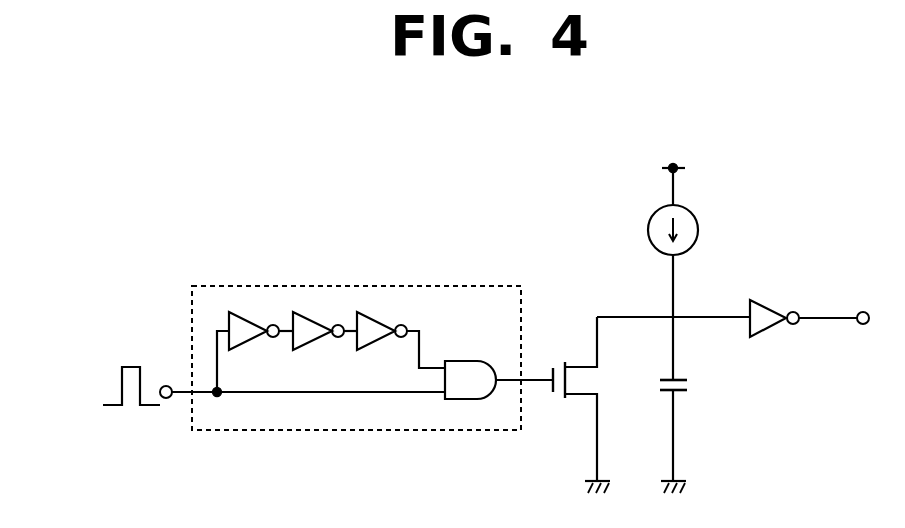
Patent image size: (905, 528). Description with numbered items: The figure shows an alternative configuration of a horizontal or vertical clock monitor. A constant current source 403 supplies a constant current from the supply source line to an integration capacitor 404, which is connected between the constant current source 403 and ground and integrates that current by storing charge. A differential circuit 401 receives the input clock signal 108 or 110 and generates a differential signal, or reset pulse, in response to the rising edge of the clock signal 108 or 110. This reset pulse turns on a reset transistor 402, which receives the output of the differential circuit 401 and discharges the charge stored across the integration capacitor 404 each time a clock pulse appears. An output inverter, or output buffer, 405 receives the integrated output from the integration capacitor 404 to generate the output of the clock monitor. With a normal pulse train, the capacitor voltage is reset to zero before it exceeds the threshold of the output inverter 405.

The input clock signal 108 is at (112, 386).
The input clock signal 110 is at (112, 386).
The differential circuit 401 is at (372, 327).
The reset transistor 402 is at (560, 402).
The constant current source 403 is at (648, 231).
The integration capacitor 404 is at (692, 386).
The output inverter 405 is at (758, 305).